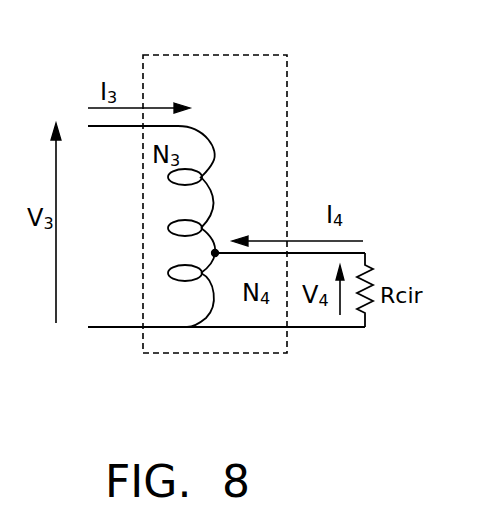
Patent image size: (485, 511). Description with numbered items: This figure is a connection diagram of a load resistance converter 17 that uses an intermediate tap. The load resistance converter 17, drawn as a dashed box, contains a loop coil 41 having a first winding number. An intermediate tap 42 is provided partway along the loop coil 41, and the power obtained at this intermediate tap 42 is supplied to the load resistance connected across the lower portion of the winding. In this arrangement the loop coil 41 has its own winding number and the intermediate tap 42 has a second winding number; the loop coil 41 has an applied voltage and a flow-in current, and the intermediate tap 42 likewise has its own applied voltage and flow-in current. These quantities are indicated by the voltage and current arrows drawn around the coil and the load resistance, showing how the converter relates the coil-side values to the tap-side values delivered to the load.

The load resistance converter 17 is at (196, 55).
The loop coil 41 is at (214, 150).
The intermediate tap 42 is at (217, 248).